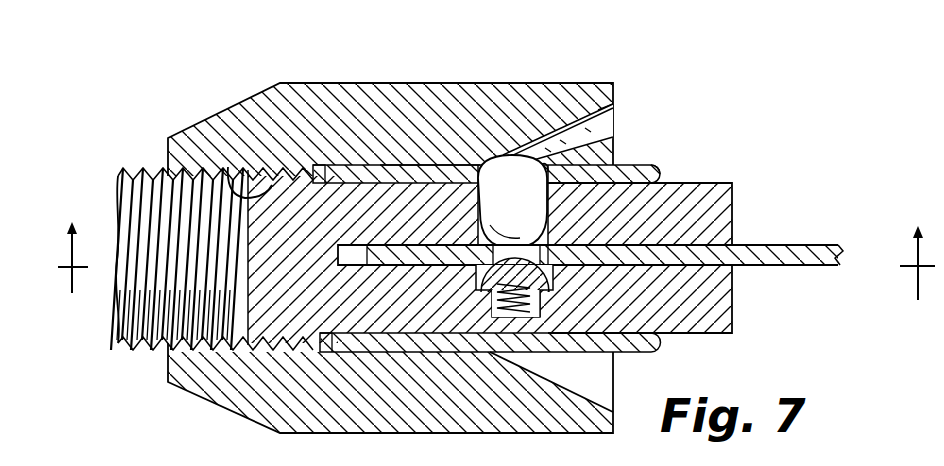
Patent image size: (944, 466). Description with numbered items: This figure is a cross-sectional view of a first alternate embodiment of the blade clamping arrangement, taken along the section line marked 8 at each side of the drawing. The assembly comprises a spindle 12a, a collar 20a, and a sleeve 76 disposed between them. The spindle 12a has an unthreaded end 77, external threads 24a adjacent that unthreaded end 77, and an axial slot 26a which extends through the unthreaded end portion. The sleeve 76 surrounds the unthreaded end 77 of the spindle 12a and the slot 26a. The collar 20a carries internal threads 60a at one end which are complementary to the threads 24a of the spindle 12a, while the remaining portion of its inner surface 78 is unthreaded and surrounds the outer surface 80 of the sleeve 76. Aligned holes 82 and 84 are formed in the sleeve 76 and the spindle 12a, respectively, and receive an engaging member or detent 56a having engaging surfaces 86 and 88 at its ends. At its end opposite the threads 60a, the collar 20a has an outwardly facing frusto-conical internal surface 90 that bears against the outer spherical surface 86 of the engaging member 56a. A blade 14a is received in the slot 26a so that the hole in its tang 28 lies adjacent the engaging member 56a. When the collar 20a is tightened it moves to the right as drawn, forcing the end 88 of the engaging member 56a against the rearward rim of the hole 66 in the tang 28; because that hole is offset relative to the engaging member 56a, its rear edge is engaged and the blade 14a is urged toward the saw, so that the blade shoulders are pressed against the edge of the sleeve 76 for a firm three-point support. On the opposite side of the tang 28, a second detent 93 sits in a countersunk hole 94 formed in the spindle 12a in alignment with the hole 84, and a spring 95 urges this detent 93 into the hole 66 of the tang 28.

The spindle 12a is at (738, 170).
The blade 14a is at (818, 245).
The collar 20a is at (598, 82).
The external threads 24a is at (157, 165).
The axial slot 26a is at (338, 257).
The tang 28 is at (398, 267).
The engaging member 56a is at (520, 213).
The internal threads 60a is at (228, 167).
The hole 66 is at (545, 226).
The sleeve 76 is at (655, 168).
The unthreaded end 77 is at (717, 323).
The inner surface 78 is at (400, 172).
The outer surface 80 is at (348, 165).
The hole 82 is at (507, 155).
The hole 84 is at (607, 133).
The engaging surface 86 is at (506, 156).
The engaging surface 88 is at (493, 250).
The frusto conical internal surface 90 is at (612, 117).
The second detent 93 is at (475, 312).
The counter sunk hole 94 is at (545, 292).
The spring 95 is at (493, 353).
The section line 8- 8 is at (496, 277).